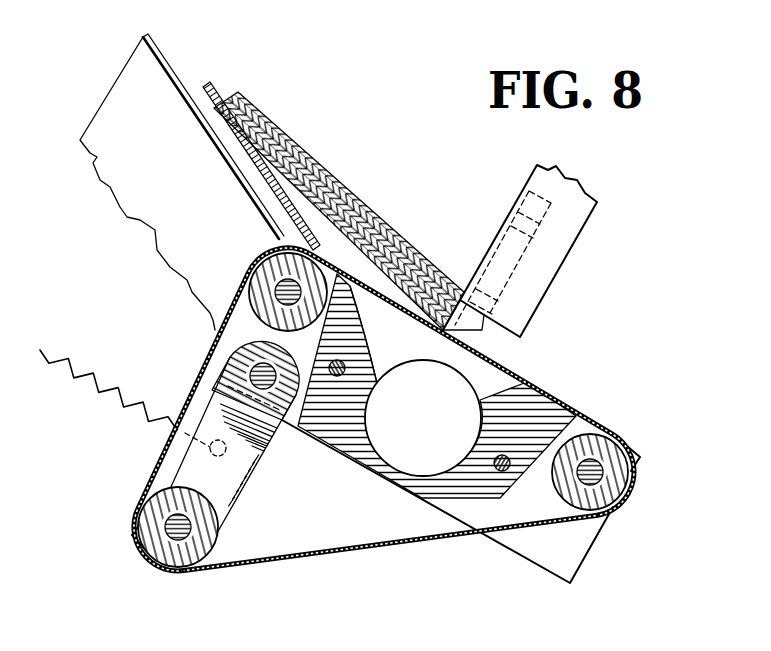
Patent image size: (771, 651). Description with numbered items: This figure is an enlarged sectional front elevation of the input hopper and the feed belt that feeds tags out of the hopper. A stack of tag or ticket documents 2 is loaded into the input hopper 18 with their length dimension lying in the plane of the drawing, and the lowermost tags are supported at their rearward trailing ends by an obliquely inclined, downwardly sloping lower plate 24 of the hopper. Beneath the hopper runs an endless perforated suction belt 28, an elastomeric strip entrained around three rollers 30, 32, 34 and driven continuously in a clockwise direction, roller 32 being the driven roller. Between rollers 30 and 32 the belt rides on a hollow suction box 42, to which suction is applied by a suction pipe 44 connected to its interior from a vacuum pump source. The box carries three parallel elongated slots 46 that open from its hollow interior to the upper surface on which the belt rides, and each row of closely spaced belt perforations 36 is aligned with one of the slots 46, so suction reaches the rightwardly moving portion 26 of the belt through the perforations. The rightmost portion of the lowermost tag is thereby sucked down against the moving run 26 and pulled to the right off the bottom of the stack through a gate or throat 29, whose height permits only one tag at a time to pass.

The tag or ticket document 2 is at (238, 92).
The input hopper 18 is at (595, 227).
The lower plate 24 is at (188, 107).
The rightwardly moving portion 26 is at (532, 381).
The perforated suction belt 28 is at (386, 552).
The gate or throat 29 is at (460, 336).
The roller 30 is at (257, 291).
The roller 32 is at (633, 481).
The roller 34 is at (182, 567).
The belt perforations 36 is at (560, 394).
The suction box 42 is at (398, 484).
The suction pipe 44 is at (437, 430).
The elongated slots 46 is at (393, 327).